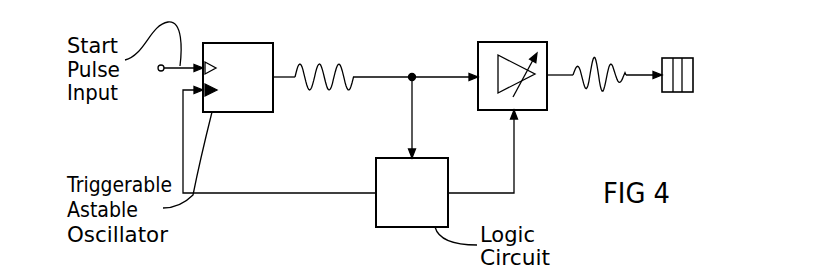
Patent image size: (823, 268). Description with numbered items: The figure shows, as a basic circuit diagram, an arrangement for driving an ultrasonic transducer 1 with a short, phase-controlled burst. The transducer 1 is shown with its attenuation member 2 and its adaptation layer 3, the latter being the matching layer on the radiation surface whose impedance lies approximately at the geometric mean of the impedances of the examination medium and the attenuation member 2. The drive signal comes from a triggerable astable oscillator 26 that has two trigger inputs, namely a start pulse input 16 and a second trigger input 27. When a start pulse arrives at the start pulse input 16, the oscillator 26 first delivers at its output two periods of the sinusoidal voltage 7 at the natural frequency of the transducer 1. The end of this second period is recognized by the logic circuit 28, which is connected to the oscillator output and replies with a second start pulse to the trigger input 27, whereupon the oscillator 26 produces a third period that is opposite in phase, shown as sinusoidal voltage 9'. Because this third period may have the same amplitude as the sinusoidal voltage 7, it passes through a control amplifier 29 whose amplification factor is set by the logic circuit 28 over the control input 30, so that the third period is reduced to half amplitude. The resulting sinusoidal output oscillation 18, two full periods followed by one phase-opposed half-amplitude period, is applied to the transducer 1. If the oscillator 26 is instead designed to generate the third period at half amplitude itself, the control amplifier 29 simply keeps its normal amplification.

The start pulse input 16 is at (175, 56).
The oscillator 26 is at (237, 112).
The trigger input 27 is at (183, 103).
The sinusoidal voltage 7 is at (318, 62).
The sinusoidal voltage 9' is at (412, 54).
The control amplifier 29 is at (515, 42).
The sinusoidal output oscillation 18 is at (595, 62).
The ultrasonic transducer 1 is at (678, 58).
The attenuation member 2 is at (667, 57).
The adaptation layer 3 is at (687, 93).
The logic circuit 28 is at (376, 171).
The control input 30 is at (514, 137).